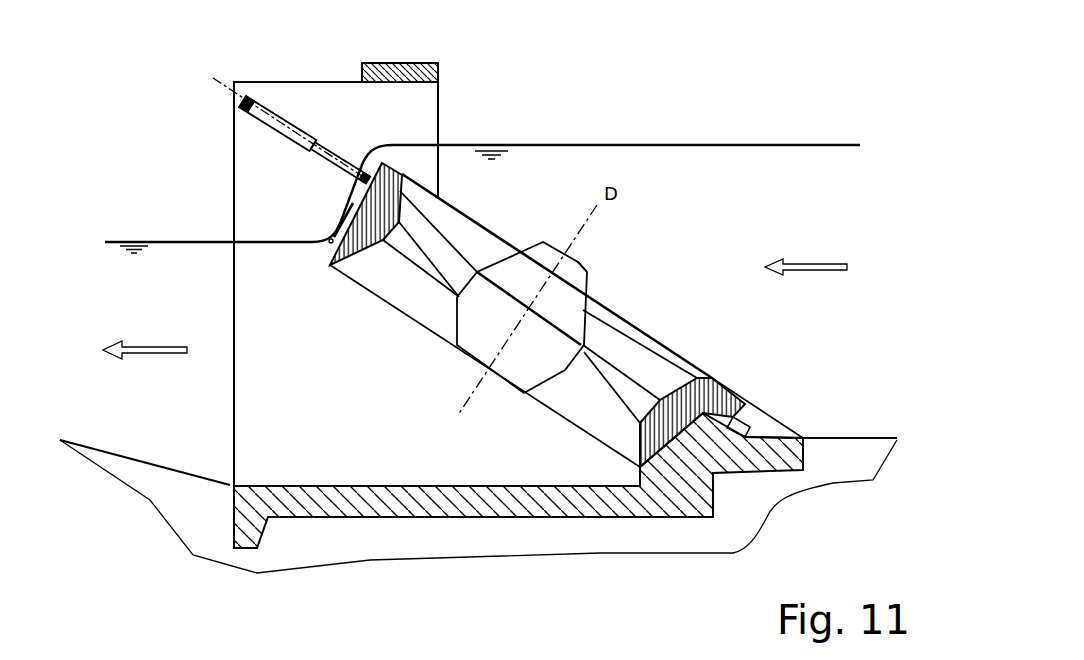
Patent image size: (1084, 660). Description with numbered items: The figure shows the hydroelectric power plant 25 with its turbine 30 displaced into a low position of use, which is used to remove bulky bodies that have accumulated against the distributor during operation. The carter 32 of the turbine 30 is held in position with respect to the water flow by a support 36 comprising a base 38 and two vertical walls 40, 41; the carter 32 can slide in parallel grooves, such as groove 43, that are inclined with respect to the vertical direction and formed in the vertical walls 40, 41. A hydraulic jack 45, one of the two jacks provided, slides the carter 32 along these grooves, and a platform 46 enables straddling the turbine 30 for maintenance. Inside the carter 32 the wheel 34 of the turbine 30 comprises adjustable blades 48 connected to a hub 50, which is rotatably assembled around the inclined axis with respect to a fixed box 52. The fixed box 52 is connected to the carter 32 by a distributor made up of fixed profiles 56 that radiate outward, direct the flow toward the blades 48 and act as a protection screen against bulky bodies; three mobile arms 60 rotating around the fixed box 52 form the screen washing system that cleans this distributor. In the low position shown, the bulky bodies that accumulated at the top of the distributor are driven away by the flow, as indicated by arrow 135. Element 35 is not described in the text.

The hydroelectric power plant 25 is at (612, 87).
The vertical wall 41 is at (292, 103).
The platform 46 is at (398, 74).
The hydraulic jack 45 is at (297, 145).
The arrow 135 is at (327, 217).
The turbine 30 is at (486, 227).
The adjustable blades 48 is at (414, 253).
The wheel 34 is at (449, 287).
The fixed box 52 is at (565, 264).
The hub 50 is at (515, 348).
The mobile arms 60 is at (592, 285).
The fixed profiles 56 is at (623, 330).
The base 38 is at (524, 505).
The support 36 is at (396, 518).
The carter 32 is at (665, 440).
The groove 43 is at (773, 467).
The vertical wall 40 is at (405, 656).
The element 35 is at (655, 656).